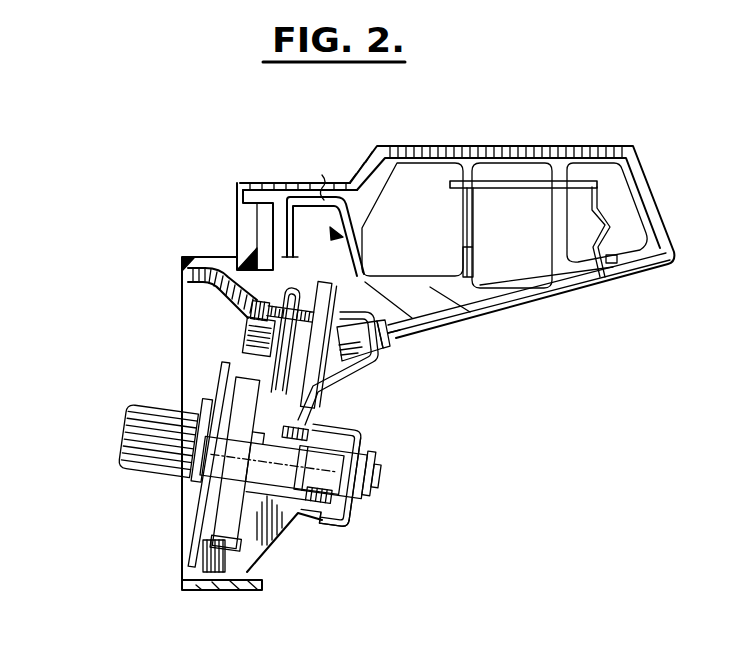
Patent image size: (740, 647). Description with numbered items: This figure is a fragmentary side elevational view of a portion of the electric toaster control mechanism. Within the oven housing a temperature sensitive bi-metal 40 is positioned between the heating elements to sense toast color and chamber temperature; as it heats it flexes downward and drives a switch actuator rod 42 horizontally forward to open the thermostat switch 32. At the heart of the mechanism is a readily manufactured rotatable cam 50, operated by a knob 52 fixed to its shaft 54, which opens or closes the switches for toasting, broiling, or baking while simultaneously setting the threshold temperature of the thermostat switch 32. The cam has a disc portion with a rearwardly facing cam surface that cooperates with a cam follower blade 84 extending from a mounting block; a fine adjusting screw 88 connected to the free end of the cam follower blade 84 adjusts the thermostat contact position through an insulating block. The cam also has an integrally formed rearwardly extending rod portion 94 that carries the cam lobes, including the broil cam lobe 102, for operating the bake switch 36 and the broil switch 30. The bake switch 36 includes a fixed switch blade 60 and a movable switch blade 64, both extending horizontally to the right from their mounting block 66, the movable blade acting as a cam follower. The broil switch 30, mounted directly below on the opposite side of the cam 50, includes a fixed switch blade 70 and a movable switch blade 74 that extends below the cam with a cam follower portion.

The broil switch 30 is at (358, 514).
The thermostat switch 32 is at (398, 351).
The bake switch 36 is at (323, 427).
The temperature sensitive bi-metal 40 is at (517, 184).
The switch actuator rod 42 is at (507, 303).
The rotatable cam 50 is at (240, 511).
The knob 52 is at (125, 435).
The shaft 54 is at (220, 452).
The fixed switch blade 60 is at (313, 442).
The movable switch blade 64 is at (297, 427).
The mounting block 66 is at (268, 522).
The fixed switch blade 70 is at (337, 507).
The movable switch blade 74 is at (340, 530).
The cam follower blade 84 is at (294, 294).
The fine adjusting screw 88 is at (233, 263).
The rod portion 94 is at (323, 460).
The broil cam lobe 102 is at (287, 500).